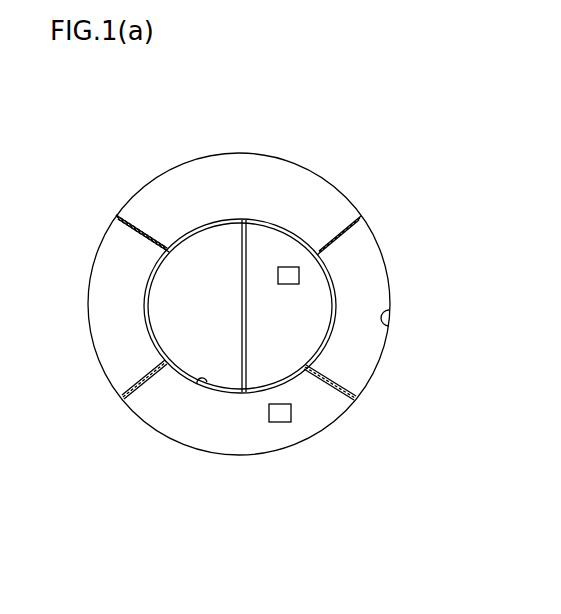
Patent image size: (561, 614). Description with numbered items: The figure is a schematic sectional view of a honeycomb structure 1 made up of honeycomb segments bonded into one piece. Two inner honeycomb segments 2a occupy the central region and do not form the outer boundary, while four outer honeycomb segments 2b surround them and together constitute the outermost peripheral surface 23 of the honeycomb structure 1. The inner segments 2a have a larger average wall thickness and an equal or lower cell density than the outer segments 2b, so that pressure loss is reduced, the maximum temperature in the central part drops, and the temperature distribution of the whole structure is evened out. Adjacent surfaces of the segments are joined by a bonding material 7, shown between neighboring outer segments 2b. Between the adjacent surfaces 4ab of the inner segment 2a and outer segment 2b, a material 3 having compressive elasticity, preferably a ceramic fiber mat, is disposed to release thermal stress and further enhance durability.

The honeycomb structure 1 is at (293, 141).
The honeycomb segment (outer segment) 2b is at (305, 185).
The honeycomb segment (inner segment) 2a is at (313, 300).
The material having compressive elasticity 3 is at (241, 393).
The bonding material 7 is at (358, 398).
The outermost peripheral surface 23 is at (390, 325).
The adjacent surfaces of the inner segment and outer segment 4ab is at (190, 387).